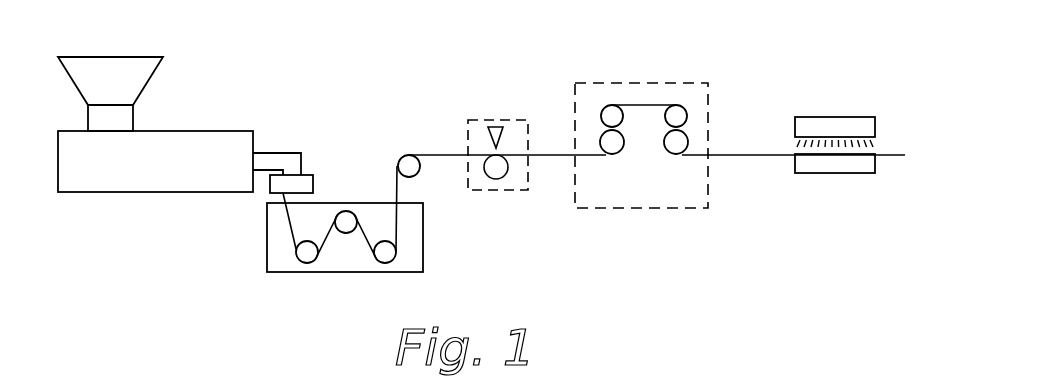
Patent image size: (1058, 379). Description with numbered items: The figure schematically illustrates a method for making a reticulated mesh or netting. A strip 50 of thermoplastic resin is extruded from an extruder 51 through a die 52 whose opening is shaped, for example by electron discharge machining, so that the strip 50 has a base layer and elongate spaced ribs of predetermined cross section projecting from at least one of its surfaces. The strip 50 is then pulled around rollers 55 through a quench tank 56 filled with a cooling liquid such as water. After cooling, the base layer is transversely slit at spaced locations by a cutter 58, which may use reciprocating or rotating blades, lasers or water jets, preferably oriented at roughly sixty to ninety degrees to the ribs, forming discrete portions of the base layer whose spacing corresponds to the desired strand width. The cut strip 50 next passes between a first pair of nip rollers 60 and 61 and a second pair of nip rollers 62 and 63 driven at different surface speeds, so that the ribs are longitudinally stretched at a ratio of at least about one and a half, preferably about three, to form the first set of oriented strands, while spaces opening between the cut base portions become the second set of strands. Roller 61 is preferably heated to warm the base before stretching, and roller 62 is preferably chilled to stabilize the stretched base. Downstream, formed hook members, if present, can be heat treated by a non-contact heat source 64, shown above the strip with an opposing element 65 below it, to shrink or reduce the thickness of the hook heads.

The strip 50 is at (290, 222).
The extruder 51 is at (178, 137).
The die 52 is at (283, 199).
The rollers 55 is at (383, 258).
The quench tank 56 is at (413, 248).
The cutter 58 is at (482, 135).
The nip roller 60 is at (612, 143).
The nip roller 61 is at (609, 108).
The nip roller 62 is at (674, 108).
The nip roller 63 is at (683, 142).
The non-contact heat source 64 is at (830, 125).
The lower heater 65 is at (838, 165).